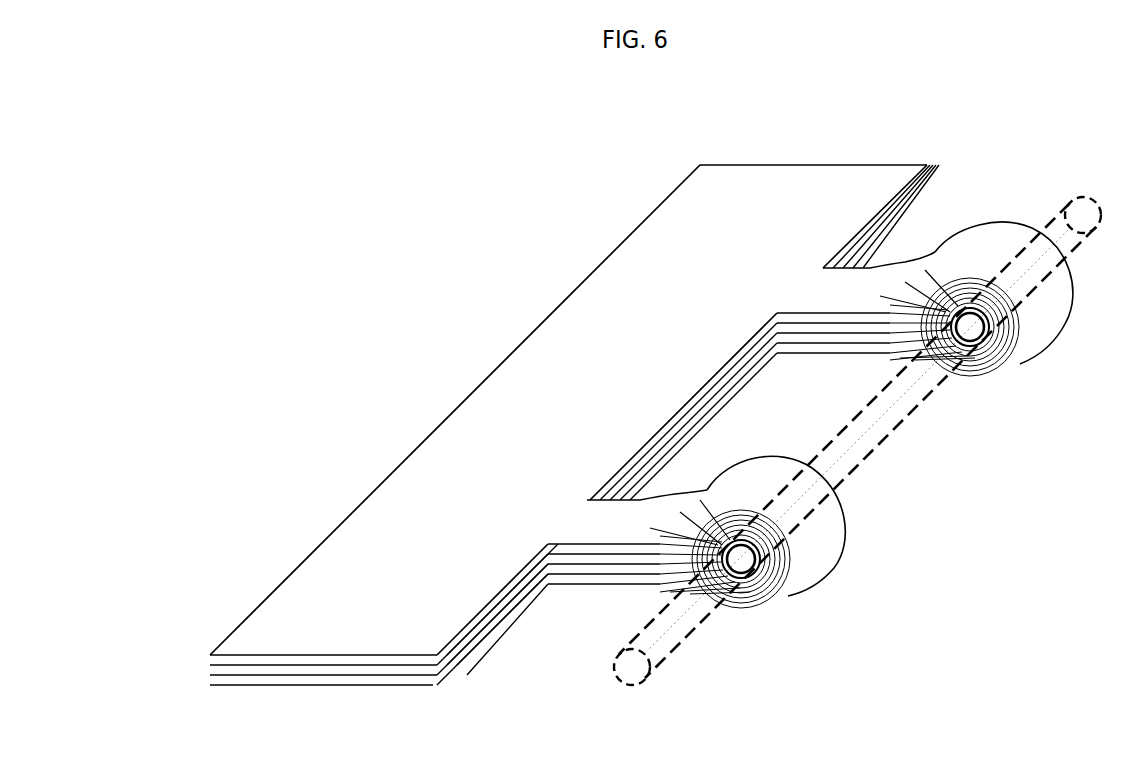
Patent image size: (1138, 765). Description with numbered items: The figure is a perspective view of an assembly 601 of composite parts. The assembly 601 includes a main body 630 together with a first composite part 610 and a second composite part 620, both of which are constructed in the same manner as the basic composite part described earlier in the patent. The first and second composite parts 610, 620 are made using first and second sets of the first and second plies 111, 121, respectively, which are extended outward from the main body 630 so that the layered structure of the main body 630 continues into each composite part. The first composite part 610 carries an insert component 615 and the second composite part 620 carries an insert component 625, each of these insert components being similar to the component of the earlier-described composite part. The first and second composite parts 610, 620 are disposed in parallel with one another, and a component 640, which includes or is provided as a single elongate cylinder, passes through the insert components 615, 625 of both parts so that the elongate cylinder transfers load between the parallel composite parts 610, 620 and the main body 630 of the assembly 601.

The assembly 601 is at (632, 180).
The main body 630 is at (530, 413).
The first plies 111 is at (418, 687).
The second plies 121 is at (483, 615).
The first composite part 610 is at (938, 268).
The insert component 615 is at (980, 328).
The second composite part 620 is at (705, 497).
The insert component 625 is at (747, 567).
The component 640 is at (902, 432).